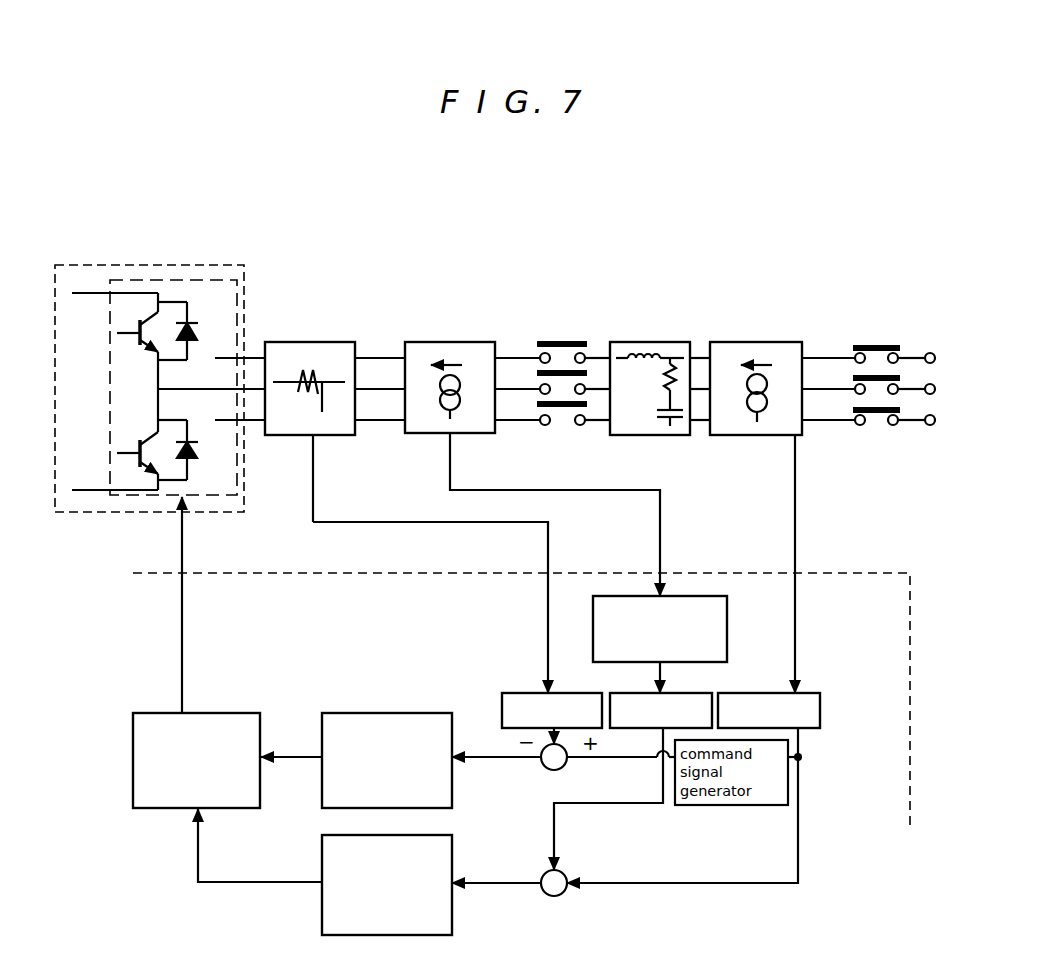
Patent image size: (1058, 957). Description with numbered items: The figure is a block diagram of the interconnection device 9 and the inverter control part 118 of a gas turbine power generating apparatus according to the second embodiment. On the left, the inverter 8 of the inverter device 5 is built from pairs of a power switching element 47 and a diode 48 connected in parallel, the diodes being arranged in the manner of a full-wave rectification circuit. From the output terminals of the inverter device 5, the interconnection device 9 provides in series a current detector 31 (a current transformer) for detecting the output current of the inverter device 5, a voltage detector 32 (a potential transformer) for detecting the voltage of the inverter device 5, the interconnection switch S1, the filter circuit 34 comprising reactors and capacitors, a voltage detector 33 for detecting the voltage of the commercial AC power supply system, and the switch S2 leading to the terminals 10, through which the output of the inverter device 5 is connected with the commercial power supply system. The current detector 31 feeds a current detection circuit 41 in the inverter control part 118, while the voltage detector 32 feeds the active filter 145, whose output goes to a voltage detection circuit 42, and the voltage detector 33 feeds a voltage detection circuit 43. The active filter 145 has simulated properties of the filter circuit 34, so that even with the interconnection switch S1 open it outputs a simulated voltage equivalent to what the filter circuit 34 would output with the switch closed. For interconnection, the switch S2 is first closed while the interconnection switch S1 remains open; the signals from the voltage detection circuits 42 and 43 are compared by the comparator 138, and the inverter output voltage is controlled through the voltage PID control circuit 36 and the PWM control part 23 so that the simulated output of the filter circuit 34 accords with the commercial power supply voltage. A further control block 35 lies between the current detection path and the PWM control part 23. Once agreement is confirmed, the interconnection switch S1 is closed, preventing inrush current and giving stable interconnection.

The inverter device 5 is at (244, 495).
The inverter 8 is at (210, 281).
The power switching element 47 is at (150, 316).
The diode 48 is at (196, 337).
The current detector 31 is at (318, 342).
The voltage detector 32 is at (446, 342).
The voltage detector 33 is at (752, 342).
The filter circuit 34 is at (645, 342).
The interconnection device 9 is at (812, 274).
The terminals 10 is at (929, 353).
The interconnection switch S1 is at (558, 341).
The switch S2 is at (877, 345).
The inverter control part 118 is at (846, 573).
The active filter 145 is at (710, 596).
The current detection circuit 41 is at (518, 693).
The voltage detection circuit 42 is at (625, 693).
The voltage detection circuit 43 is at (808, 693).
The PWM control part 23 is at (228, 713).
The current controller 35 is at (398, 713).
The voltage PID control circuit 36 is at (322, 893).
The comparator 138 is at (545, 893).